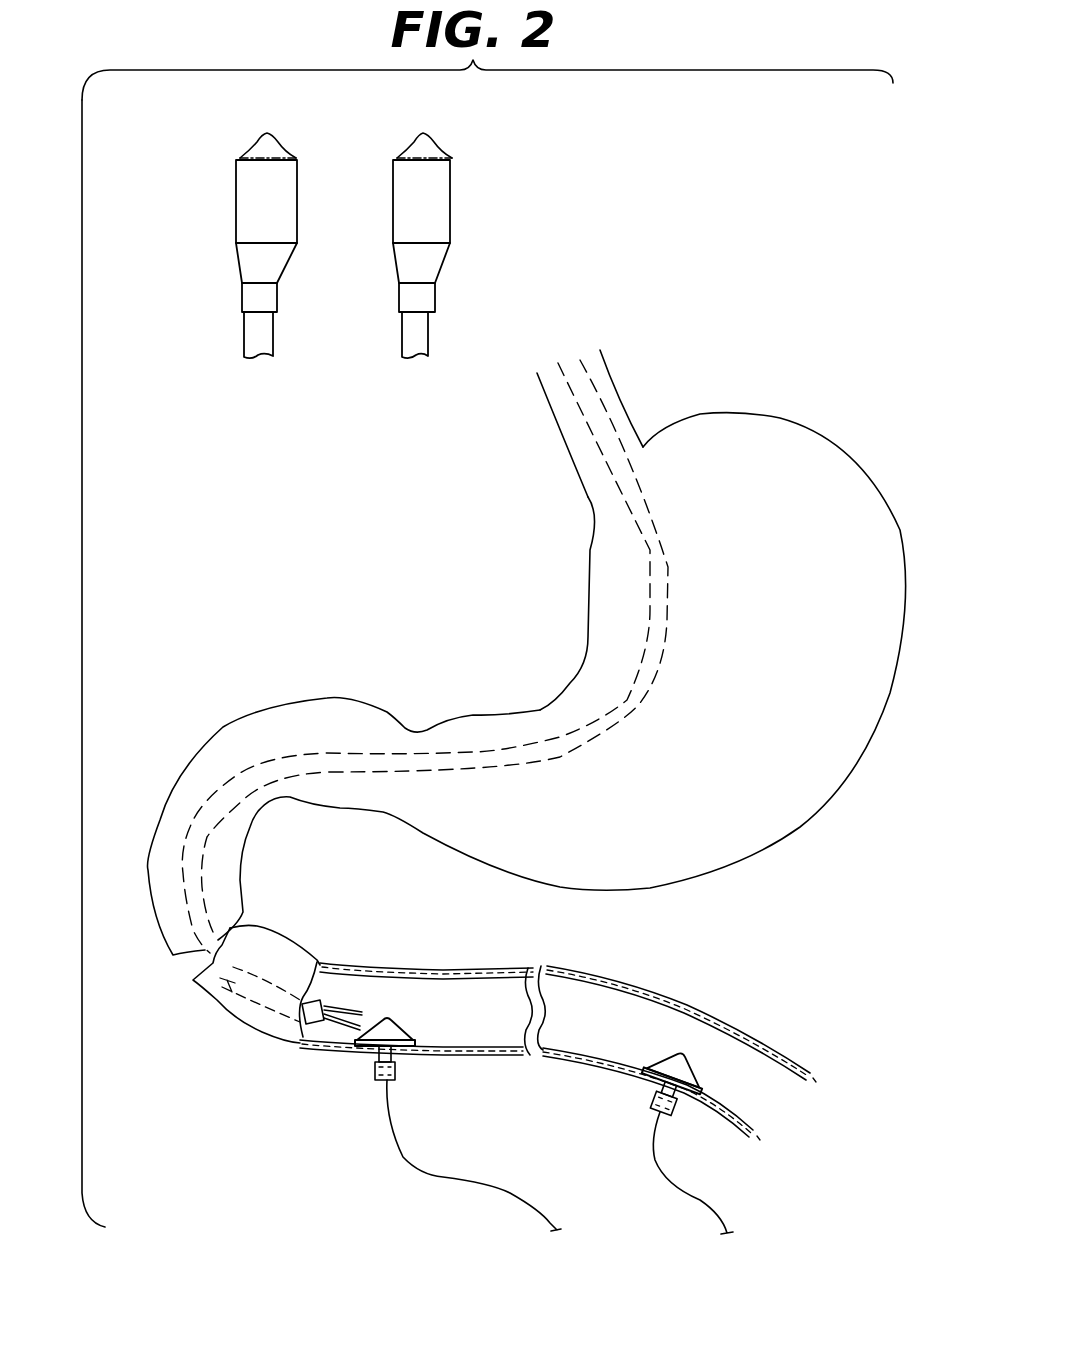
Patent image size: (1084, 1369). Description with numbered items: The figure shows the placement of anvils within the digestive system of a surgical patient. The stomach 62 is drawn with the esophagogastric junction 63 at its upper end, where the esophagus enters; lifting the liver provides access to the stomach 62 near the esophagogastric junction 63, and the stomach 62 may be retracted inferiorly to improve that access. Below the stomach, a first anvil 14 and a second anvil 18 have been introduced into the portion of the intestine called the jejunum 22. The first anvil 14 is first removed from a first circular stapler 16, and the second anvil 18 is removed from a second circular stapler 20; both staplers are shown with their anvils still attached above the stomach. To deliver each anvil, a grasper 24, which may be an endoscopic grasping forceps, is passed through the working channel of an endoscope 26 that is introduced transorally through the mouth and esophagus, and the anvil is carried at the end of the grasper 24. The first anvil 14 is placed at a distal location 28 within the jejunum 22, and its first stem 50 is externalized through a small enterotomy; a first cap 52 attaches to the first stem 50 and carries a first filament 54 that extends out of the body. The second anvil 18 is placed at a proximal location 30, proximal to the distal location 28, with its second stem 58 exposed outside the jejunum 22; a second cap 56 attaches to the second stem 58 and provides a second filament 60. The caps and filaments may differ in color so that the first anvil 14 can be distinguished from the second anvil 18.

The first anvil 14 is at (436, 150).
The first circular stapler 16 is at (450, 207).
The second anvil 18 is at (257, 147).
The second circular stapler 20 is at (236, 215).
The jejunum 22 is at (307, 960).
The grasper 24 is at (348, 1008).
The endoscope 26 is at (215, 992).
The distal location 28 is at (693, 1097).
The proximal location 30 is at (405, 1057).
The first stem 50 is at (660, 1087).
The first cap 52 is at (650, 1100).
The first filament 54 is at (723, 1213).
The second cap 56 is at (372, 1077).
The second stem 58 is at (378, 1058).
The second filament 60 is at (403, 1157).
The stomach 62 is at (588, 623).
The esophagogastric junction 63 is at (645, 445).